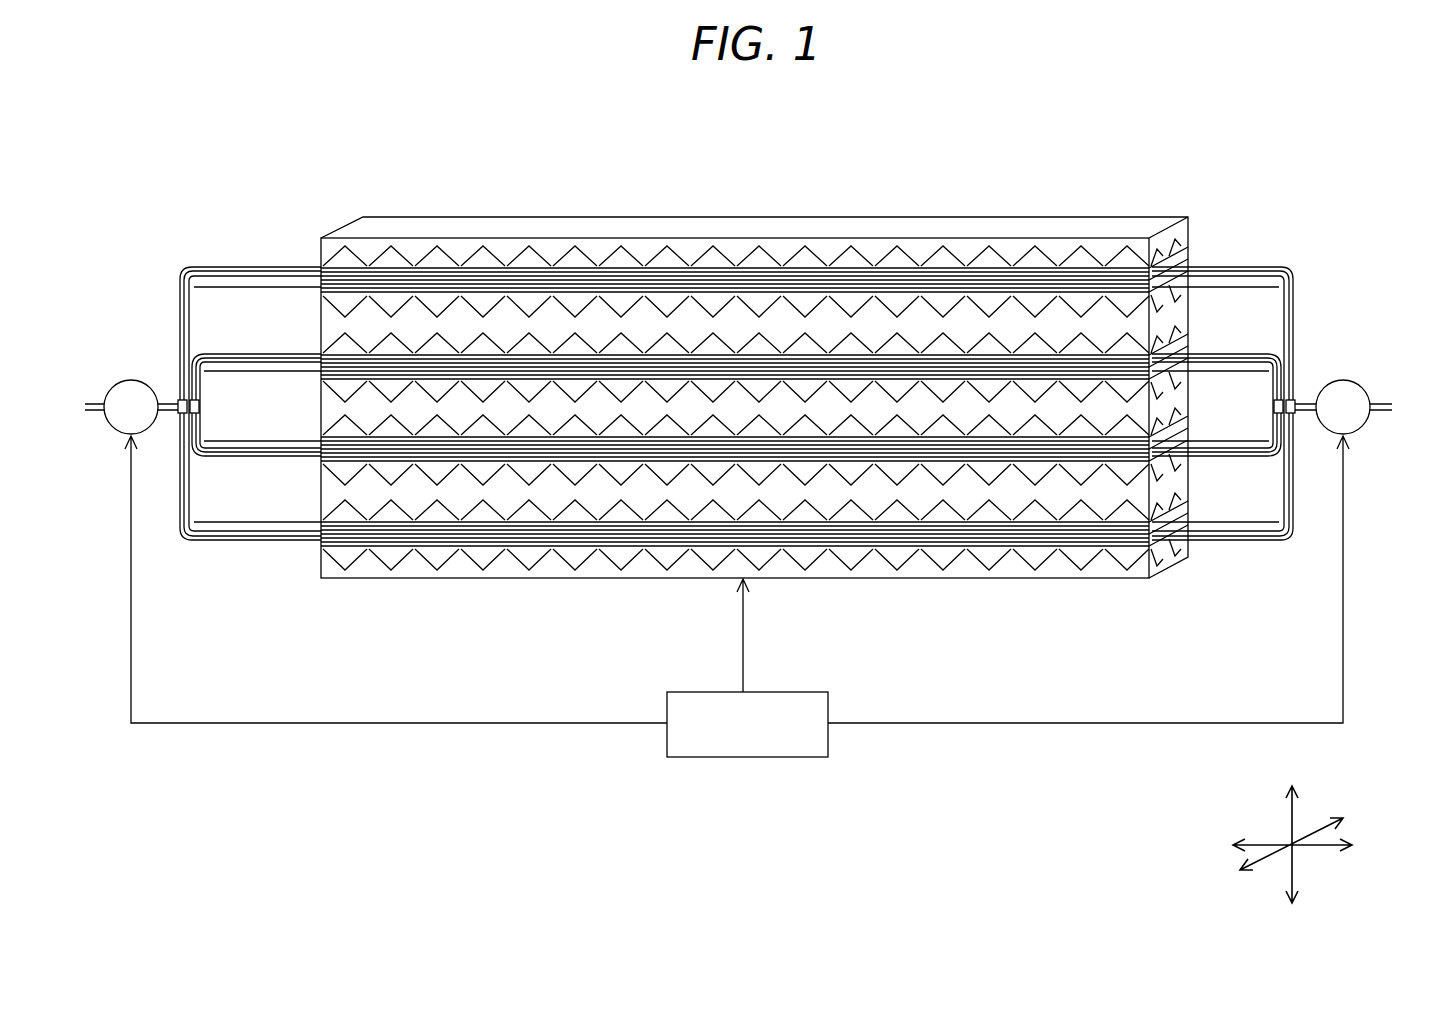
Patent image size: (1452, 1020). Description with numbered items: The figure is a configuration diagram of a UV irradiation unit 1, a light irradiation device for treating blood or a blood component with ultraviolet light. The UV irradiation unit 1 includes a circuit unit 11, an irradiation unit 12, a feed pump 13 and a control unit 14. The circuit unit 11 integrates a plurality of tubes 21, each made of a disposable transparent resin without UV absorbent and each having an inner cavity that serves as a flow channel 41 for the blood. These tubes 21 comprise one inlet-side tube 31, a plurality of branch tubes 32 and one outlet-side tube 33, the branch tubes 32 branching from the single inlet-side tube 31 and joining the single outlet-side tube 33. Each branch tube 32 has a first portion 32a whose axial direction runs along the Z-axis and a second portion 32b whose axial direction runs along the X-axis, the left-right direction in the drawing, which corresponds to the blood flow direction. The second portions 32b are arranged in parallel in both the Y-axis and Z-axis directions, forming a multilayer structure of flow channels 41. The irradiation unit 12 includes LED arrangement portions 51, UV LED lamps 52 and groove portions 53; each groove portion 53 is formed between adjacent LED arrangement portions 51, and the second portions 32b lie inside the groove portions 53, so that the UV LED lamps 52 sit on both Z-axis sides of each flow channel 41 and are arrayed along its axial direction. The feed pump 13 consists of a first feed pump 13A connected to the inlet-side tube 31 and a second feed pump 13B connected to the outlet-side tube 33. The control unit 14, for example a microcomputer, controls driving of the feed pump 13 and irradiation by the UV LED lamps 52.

The UV irradiation unit 1 is at (1164, 171).
The circuit unit 11 is at (1313, 256).
The irradiation unit 12 is at (802, 221).
The feed pump 13 is at (742, 435).
The first feed pump 13A is at (108, 428).
The second feed pump 13B is at (1358, 422).
The control unit 14 is at (803, 692).
The tube 21 is at (1295, 298).
The inlet-side tube 31 is at (170, 398).
The branch tube 32 is at (688, 411).
The first portion 32a is at (180, 306).
The second portion 32b is at (234, 352).
The outlet-side tube 33 is at (1302, 395).
The flow channel 41 is at (736, 403).
The LED arrangement portion 51 is at (508, 318).
The UV LED lamp 52 is at (345, 243).
The groove portion 53 is at (548, 280).